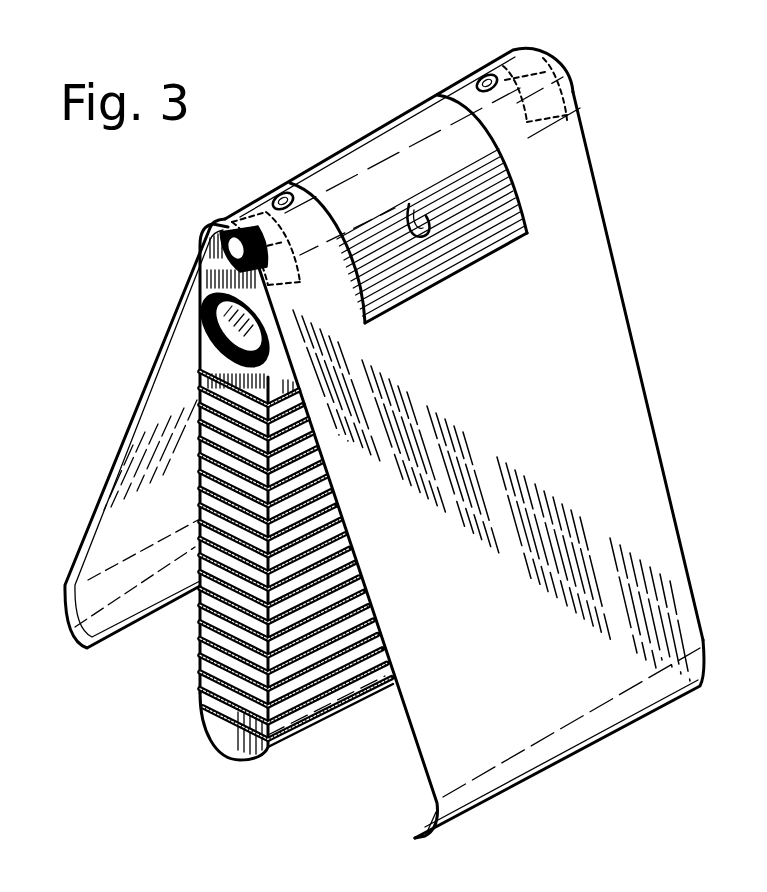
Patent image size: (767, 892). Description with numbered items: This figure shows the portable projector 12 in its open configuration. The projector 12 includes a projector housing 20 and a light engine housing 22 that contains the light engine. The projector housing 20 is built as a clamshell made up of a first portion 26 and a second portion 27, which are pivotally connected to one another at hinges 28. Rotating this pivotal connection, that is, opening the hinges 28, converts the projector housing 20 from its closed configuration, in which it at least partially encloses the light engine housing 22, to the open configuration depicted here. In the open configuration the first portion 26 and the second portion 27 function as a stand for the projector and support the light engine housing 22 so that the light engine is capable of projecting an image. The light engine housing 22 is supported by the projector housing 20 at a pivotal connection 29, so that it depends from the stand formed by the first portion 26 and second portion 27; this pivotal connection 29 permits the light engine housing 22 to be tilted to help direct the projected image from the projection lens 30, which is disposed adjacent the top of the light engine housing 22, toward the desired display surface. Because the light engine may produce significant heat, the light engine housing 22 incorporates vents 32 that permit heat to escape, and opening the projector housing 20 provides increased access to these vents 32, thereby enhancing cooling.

The projector 12 is at (702, 187).
The projector housing 20 is at (640, 327).
The light engine housing 22 is at (177, 636).
The first portion 26 is at (96, 497).
The second portion 27 is at (662, 461).
The hinges 28 is at (243, 216).
The pivotal connection 29 is at (419, 205).
The projection lens 30 is at (228, 318).
The vents 32 is at (300, 687).